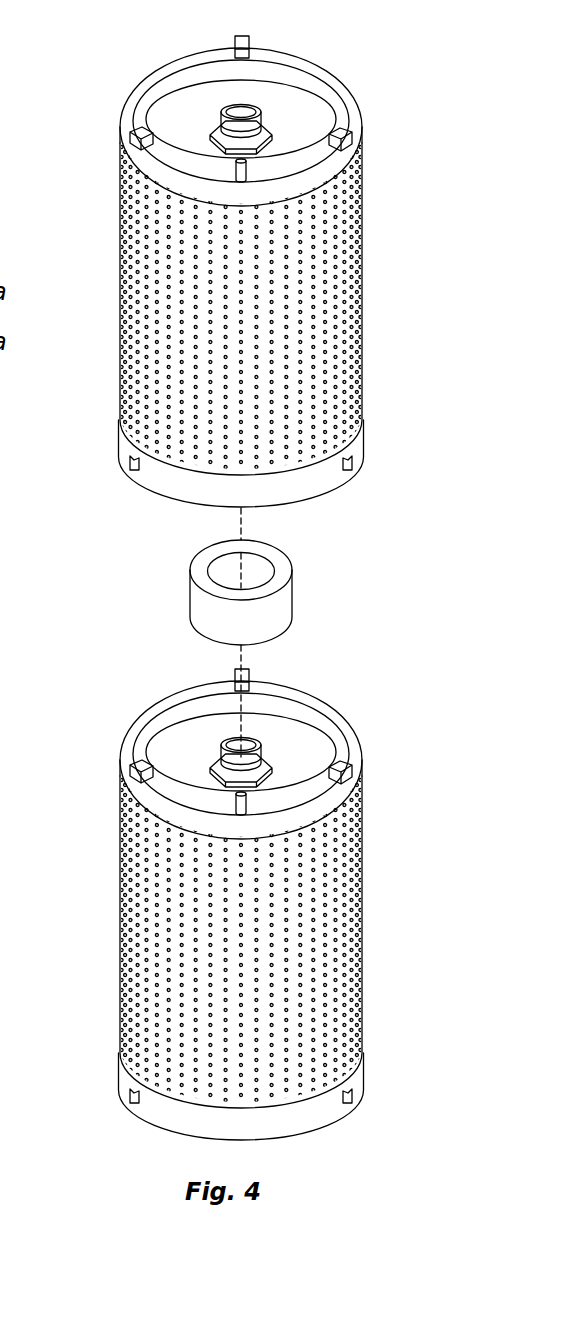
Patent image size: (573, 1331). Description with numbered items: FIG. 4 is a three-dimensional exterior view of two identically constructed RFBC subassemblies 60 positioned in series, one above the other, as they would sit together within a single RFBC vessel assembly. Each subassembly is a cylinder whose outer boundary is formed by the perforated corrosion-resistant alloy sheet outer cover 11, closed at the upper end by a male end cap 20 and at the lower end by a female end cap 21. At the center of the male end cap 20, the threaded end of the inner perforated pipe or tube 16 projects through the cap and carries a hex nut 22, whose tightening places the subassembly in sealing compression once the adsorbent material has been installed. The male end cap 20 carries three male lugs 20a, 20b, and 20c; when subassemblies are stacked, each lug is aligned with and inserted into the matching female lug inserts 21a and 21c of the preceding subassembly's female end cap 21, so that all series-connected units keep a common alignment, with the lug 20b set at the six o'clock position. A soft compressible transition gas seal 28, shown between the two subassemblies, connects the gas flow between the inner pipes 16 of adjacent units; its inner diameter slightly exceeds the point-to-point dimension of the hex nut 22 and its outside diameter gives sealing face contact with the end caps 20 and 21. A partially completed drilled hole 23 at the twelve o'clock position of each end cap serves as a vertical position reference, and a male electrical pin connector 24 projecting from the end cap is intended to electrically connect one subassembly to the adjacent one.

The filter cartridge assembly 60 is at (97, 248).
The perforated metal corrosion resistant alloy sheet outer cover 11 is at (362, 273).
The male end cap 20 is at (198, 57).
The male lug 20a is at (348, 132).
The male lug 20b is at (250, 42).
The male lug 20c is at (133, 133).
The perforated pipe or tube 16 is at (228, 108).
The hex nut 22 is at (212, 132).
The partially completed drilled hole 23 is at (170, 181).
The male electrical pin connector 24 is at (233, 167).
The female end cap 21 is at (178, 482).
The female lug insert 21a is at (345, 467).
The female lug insert 21c is at (130, 460).
The transition gas seal 28 is at (200, 571).